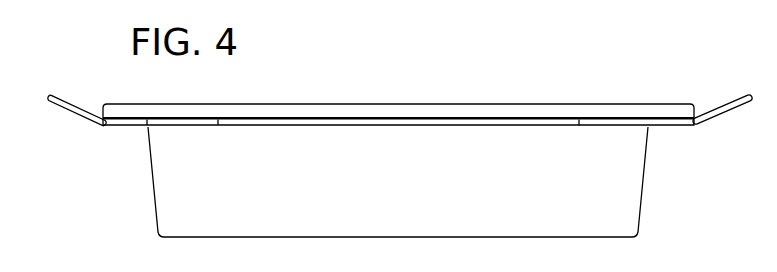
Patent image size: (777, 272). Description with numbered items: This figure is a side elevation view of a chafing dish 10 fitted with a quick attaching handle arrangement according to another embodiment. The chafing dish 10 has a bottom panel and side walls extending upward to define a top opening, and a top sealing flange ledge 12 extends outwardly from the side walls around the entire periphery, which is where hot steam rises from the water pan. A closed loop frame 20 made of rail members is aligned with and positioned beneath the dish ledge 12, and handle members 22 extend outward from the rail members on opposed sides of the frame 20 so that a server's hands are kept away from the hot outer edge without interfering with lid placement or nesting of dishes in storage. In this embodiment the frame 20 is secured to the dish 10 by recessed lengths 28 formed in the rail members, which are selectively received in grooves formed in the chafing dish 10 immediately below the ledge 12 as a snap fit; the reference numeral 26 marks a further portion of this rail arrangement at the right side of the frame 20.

The chafing dish 10 is at (390, 196).
The closed loop frame 20 is at (408, 115).
The recessed lengths 28 is at (335, 125).
The rim segment 26 is at (670, 123).
The handle members 22 is at (72, 112).
The sealing flange ledge 12 is at (670, 103).